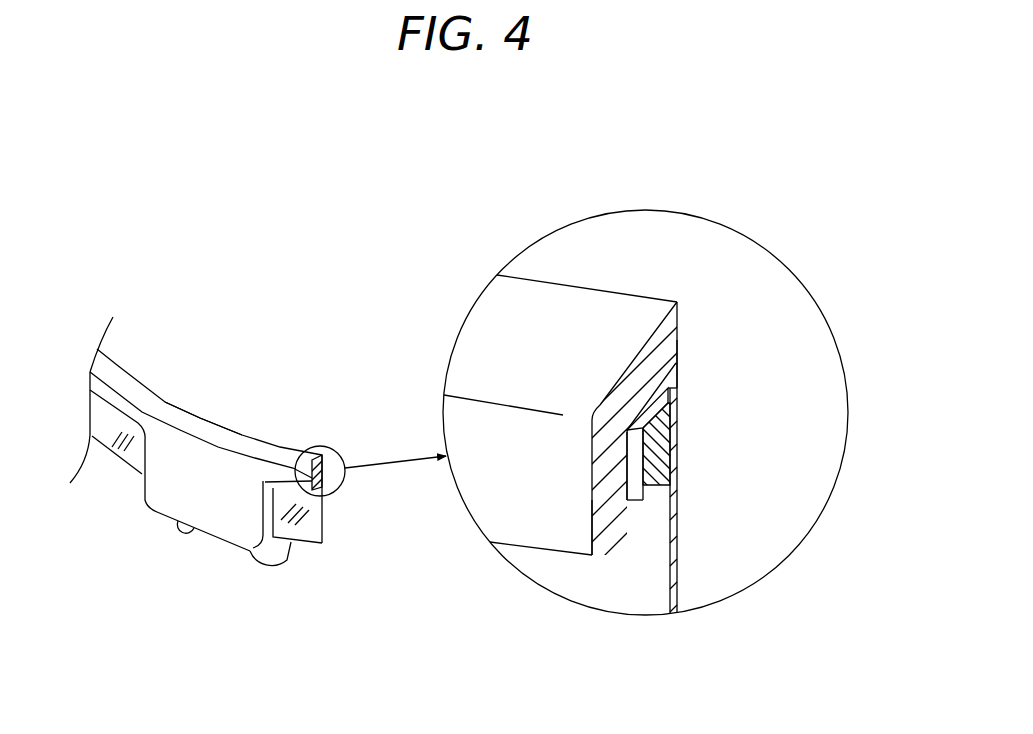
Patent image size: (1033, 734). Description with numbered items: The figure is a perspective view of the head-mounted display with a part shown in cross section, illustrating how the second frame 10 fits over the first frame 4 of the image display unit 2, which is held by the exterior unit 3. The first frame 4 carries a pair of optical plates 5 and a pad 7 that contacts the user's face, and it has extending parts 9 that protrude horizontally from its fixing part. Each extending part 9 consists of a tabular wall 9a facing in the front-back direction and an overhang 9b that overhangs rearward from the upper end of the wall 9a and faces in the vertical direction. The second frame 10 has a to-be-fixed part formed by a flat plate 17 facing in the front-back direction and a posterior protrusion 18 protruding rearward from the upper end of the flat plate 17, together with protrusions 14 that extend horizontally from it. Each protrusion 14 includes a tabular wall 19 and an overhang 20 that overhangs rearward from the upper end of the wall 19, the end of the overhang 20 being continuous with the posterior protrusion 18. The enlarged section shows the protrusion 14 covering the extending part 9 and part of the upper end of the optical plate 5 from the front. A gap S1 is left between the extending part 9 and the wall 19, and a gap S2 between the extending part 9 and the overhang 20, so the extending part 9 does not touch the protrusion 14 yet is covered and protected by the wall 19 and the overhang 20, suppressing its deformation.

The image display unit 2 is at (103, 435).
The exterior unit 3 is at (242, 442).
The first frame 4 is at (666, 485).
The optical plate 5 is at (127, 468).
The pad 7 is at (277, 560).
The extending part 9 is at (677, 417).
The wall 9a is at (658, 473).
The overhang 9b is at (673, 410).
The second frame 10 is at (157, 507).
The protrusion 14 is at (139, 391).
The flat plate 17 is at (214, 528).
The posterior protrusion 18 is at (212, 428).
The wall 19 is at (636, 460).
The overhang 20 is at (110, 373).
The gap S1 is at (643, 473).
The gap S2 is at (675, 377).